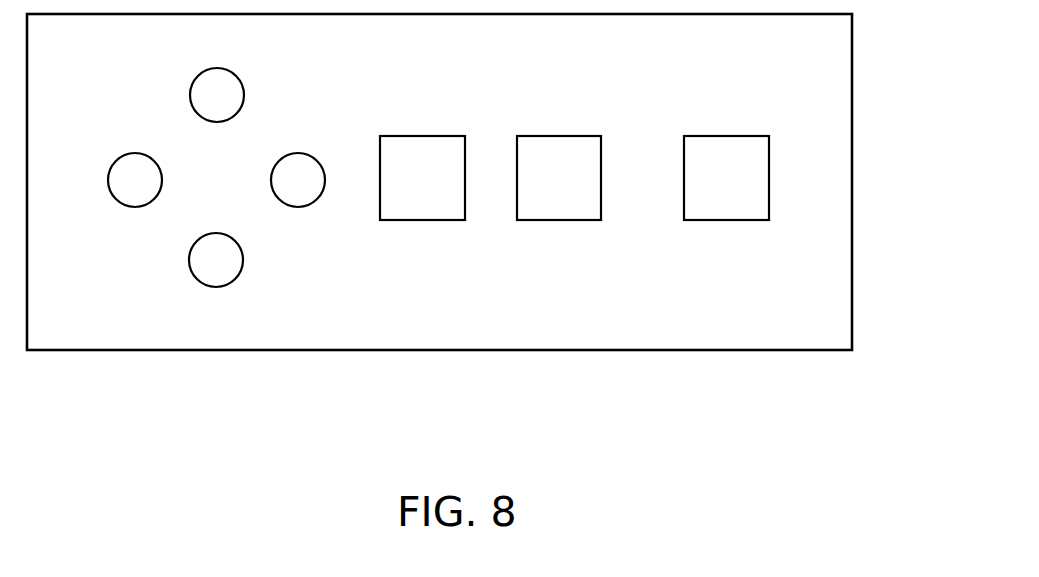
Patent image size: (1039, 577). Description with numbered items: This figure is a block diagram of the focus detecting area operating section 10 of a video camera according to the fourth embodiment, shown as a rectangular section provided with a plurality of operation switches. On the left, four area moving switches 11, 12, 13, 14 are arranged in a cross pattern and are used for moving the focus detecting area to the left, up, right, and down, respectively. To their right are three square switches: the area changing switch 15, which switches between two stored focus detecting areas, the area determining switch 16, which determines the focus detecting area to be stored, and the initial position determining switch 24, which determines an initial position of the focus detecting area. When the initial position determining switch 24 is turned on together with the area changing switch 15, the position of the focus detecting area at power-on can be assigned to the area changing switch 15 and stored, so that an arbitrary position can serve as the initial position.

The focus detecting area operating section 10 is at (787, 85).
The area moving switch 11 is at (108, 178).
The area moving switch 12 is at (219, 68).
The area moving switch 13 is at (299, 152).
The area moving switch 14 is at (215, 288).
The area changing switch 15 is at (422, 220).
The area determining switch 16 is at (558, 220).
The initial position determining switch 24 is at (726, 220).